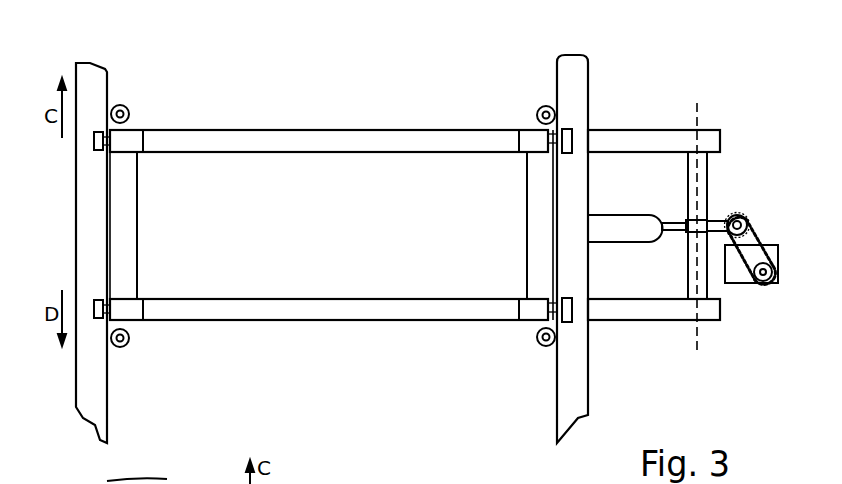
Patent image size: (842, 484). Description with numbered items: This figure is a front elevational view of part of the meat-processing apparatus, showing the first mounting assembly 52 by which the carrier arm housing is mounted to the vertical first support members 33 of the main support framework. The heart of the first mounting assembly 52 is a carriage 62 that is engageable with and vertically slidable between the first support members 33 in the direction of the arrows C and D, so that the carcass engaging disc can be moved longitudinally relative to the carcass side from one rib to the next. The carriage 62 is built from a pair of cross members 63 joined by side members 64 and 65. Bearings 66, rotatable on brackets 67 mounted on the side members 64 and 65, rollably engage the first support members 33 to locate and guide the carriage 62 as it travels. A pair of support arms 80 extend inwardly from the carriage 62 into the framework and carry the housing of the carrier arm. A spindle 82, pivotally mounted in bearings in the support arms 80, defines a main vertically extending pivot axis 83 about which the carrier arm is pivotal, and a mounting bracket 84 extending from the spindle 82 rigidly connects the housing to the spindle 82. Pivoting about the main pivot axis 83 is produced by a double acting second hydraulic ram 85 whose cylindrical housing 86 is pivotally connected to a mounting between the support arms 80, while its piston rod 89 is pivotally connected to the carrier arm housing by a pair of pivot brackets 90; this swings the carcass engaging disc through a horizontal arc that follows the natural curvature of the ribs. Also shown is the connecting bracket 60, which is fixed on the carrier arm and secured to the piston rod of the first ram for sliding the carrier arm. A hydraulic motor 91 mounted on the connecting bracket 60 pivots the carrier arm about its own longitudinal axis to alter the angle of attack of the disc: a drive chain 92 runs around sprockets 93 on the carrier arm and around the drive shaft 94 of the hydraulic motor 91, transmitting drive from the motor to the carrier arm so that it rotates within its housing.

The first support member 33 is at (80, 382).
The first mounting assembly 52 is at (304, 344).
The connecting bracket 60 is at (773, 237).
The carriage 62 is at (288, 140).
The cross members 63 is at (393, 140).
The side member 64 is at (128, 240).
The side member 65 is at (538, 212).
The bearings 66 is at (121, 104).
The brackets 67 is at (130, 123).
The support arms 80 is at (642, 140).
The spindle 82 is at (705, 167).
The main pivot axis 83 is at (698, 333).
The mounting bracket 84 is at (708, 215).
The second hydraulic ram 85 is at (615, 214).
The cylindrical housing 86 is at (628, 245).
The piston rod 89 is at (672, 222).
The pivot brackets 90 is at (737, 212).
The hydraulic motor 91 is at (780, 250).
The drive chain 92 is at (741, 283).
The sprockets 93 is at (763, 220).
The drive shaft 94 is at (762, 283).